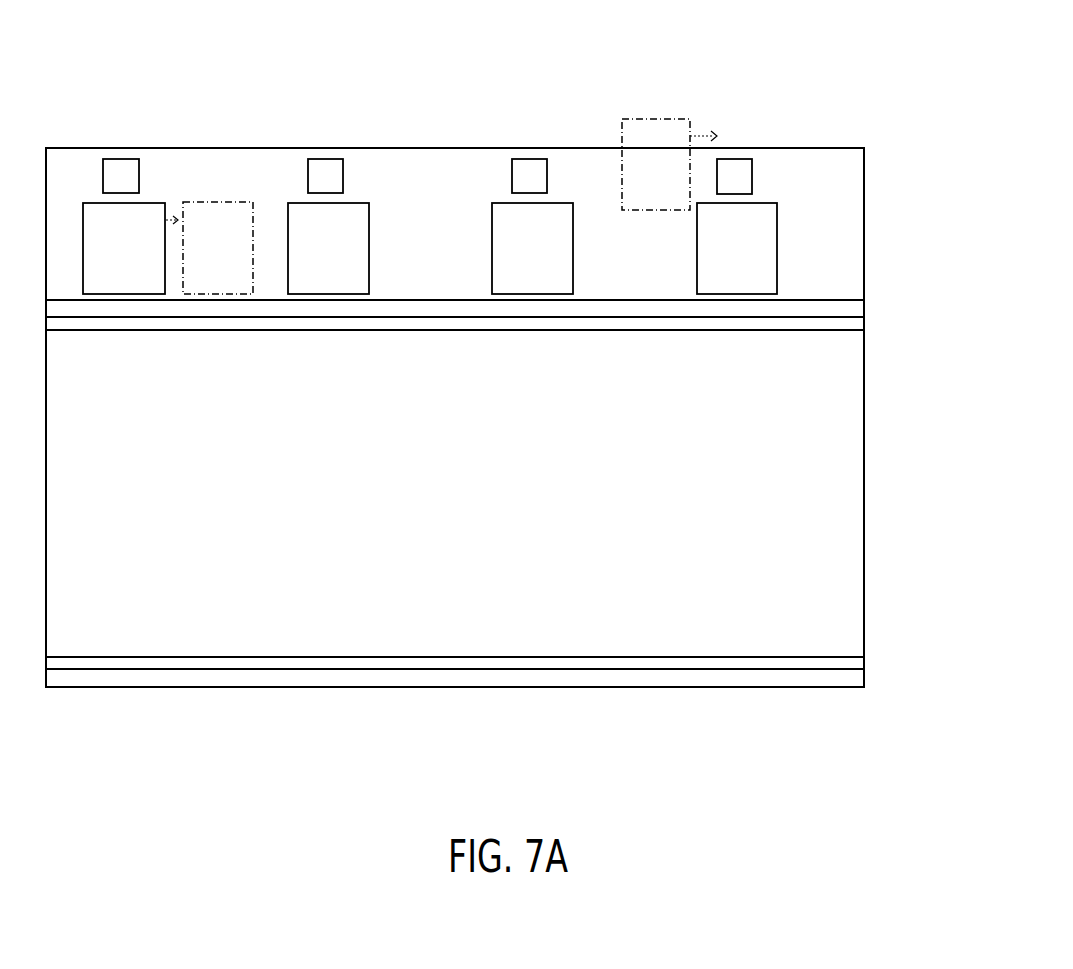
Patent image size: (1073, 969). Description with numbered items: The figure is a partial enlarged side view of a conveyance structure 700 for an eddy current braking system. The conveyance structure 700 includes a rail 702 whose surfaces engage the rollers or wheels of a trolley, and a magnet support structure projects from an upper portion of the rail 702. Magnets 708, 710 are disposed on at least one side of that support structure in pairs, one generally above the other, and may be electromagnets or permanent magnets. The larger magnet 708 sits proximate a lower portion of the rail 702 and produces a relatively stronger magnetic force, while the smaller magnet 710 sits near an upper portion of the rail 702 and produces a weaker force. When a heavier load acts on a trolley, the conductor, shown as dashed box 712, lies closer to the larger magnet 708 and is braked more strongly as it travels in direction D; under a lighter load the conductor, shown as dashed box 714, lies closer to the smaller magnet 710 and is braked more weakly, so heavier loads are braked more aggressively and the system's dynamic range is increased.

The conveyance structure 700 is at (946, 290).
The rail 702 is at (806, 474).
The larger magnet 708 is at (756, 232).
The smaller magnet 710 is at (533, 172).
The conductor 712 is at (209, 270).
The conductor 714 is at (654, 132).